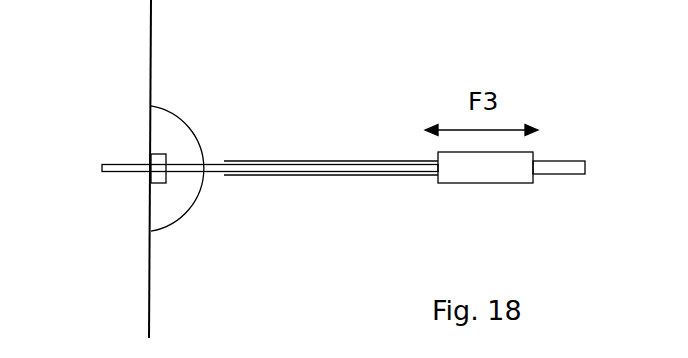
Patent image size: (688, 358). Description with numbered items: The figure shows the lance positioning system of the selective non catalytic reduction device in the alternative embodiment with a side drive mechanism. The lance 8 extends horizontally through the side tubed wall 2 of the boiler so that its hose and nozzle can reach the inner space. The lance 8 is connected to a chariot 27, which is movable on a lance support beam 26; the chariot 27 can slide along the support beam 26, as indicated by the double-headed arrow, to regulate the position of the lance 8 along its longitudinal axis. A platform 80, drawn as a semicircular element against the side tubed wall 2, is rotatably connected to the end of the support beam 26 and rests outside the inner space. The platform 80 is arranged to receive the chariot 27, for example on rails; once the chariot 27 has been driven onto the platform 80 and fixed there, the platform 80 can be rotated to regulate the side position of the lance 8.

The side tubed wall 2 is at (151, 60).
The lance 8 is at (125, 163).
The platform 80 is at (192, 132).
The lance support beam 26 is at (570, 166).
The chariot 27 is at (496, 171).